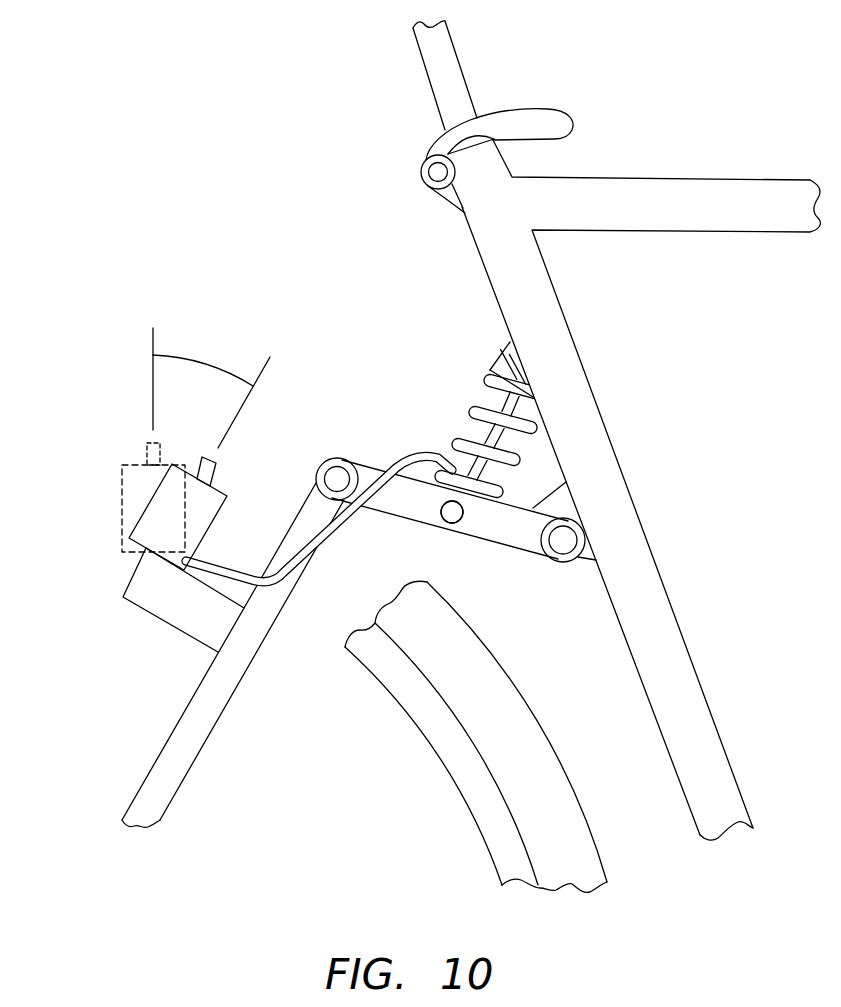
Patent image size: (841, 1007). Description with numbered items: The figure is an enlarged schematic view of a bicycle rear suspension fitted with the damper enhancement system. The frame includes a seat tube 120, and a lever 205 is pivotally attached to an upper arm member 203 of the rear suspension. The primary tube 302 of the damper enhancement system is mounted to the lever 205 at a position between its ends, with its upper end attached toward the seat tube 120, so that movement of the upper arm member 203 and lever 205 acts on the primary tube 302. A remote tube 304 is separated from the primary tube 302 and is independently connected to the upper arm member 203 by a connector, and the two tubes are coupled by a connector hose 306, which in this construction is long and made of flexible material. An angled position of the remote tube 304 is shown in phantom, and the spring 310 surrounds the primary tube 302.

The bicycle seat tube 120 is at (627, 498).
The upper arm members 203 is at (237, 688).
The lever 205 is at (368, 459).
The primary tube 302 is at (471, 470).
The remote tube 304 is at (220, 462).
The connector hose 306 is at (368, 487).
The spring 310 is at (500, 397).